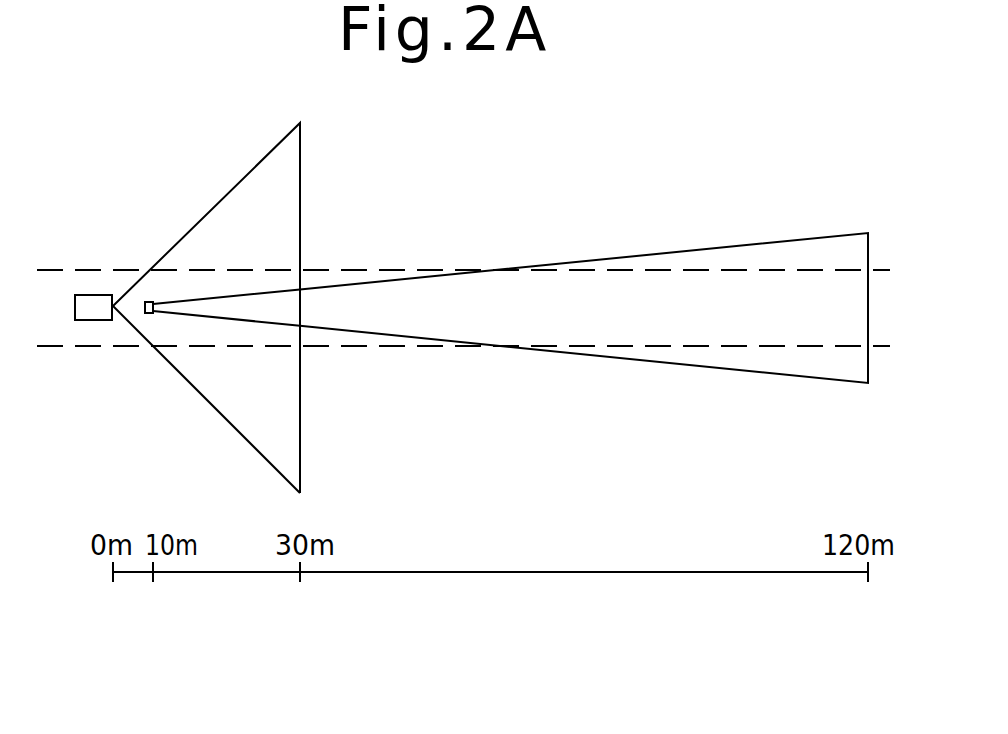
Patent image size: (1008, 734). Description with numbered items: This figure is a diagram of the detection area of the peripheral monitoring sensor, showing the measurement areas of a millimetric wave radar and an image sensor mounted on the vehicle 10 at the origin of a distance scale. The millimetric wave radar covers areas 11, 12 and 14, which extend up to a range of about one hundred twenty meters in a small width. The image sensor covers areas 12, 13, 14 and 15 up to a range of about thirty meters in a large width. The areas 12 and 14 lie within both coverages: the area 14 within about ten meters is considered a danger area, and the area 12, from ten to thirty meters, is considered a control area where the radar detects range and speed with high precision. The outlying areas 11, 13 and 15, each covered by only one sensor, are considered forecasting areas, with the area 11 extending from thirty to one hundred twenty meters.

The vehicle / radar unit 10 is at (88, 295).
The area 11 is at (577, 287).
The area 12 is at (270, 308).
The area 13 is at (287, 168).
The area 14 is at (147, 308).
The area 15 is at (137, 317).